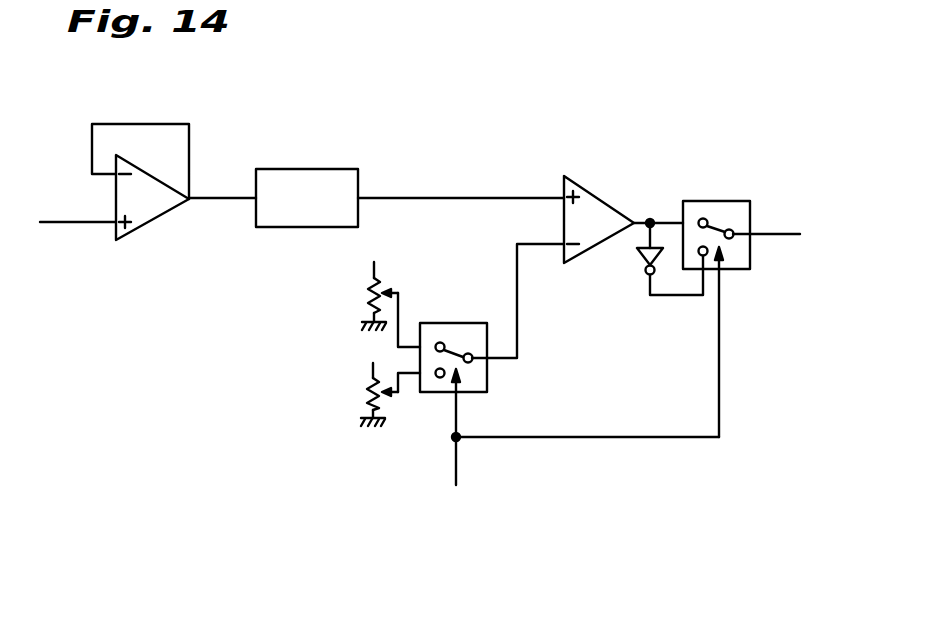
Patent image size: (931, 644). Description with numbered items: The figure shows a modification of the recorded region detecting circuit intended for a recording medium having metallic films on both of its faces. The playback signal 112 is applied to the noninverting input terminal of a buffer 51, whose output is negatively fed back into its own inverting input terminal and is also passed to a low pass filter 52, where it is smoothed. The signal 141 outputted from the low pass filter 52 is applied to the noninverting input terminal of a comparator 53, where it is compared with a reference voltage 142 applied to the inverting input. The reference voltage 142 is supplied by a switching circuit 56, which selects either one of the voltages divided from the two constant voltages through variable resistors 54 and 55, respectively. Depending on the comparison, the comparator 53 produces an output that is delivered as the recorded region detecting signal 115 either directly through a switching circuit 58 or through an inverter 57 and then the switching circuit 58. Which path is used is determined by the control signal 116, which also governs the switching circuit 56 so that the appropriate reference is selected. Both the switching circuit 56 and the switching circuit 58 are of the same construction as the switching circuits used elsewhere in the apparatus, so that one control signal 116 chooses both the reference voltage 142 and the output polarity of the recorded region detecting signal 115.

The playback signal 112 is at (63, 225).
The buffer 51 is at (152, 224).
The low pass filter 52 is at (313, 168).
The signal outputted from the low pass filter 141 is at (420, 197).
The comparator 53 is at (605, 197).
The switching circuit 58 is at (718, 200).
The recorded region detecting signal 115 is at (780, 236).
The inverter 57 is at (639, 255).
The variable resistor 54 is at (373, 290).
The variable resistor 55 is at (370, 393).
The reference voltage 142 is at (517, 270).
The switching circuit 56 is at (488, 375).
The control signal 116 is at (458, 458).